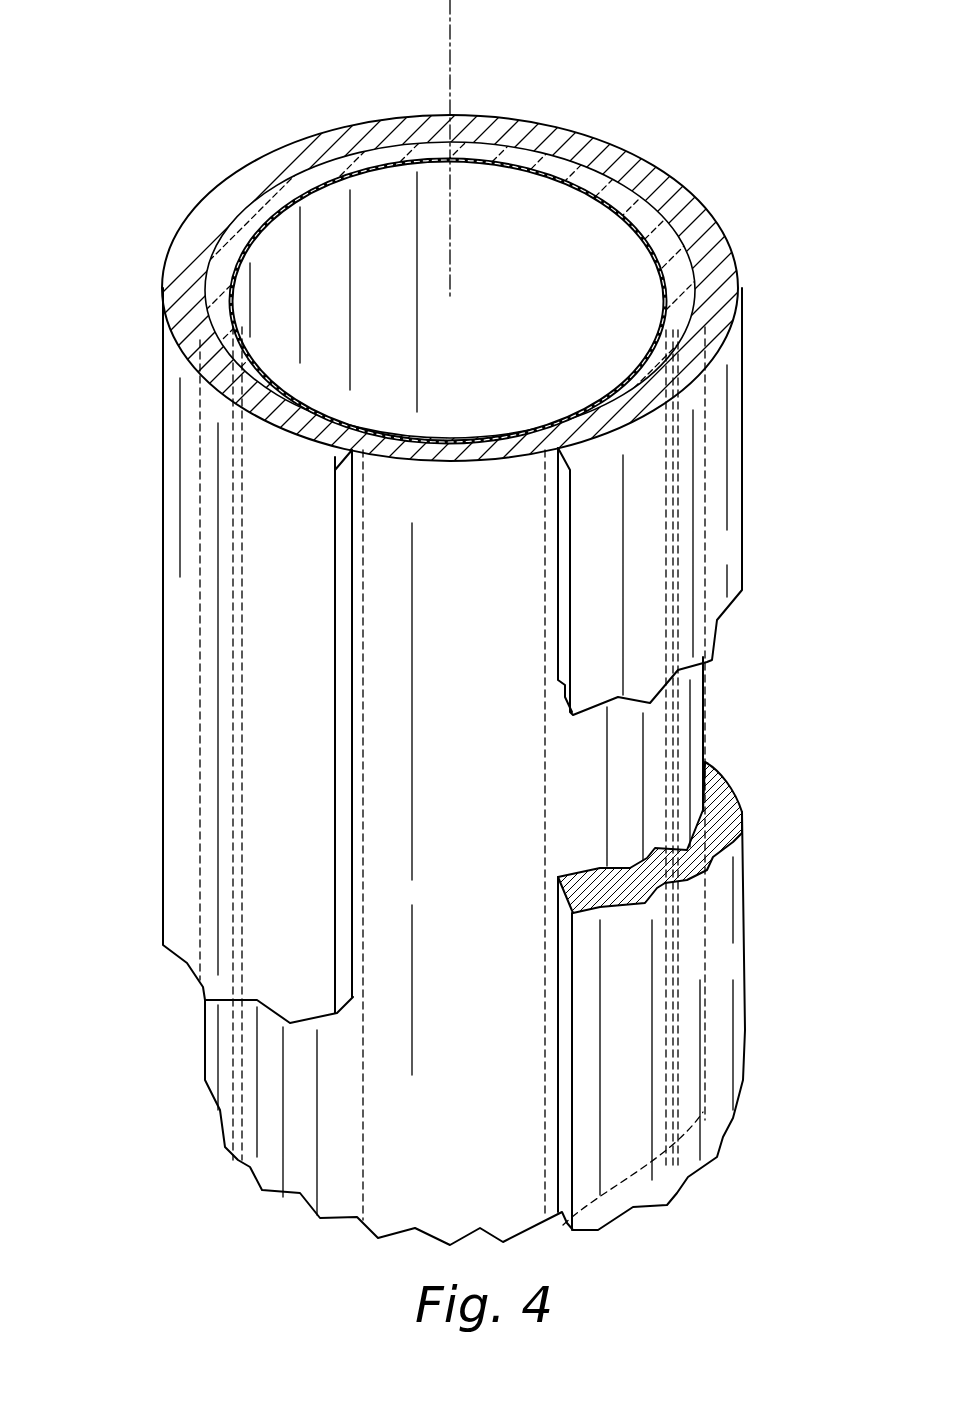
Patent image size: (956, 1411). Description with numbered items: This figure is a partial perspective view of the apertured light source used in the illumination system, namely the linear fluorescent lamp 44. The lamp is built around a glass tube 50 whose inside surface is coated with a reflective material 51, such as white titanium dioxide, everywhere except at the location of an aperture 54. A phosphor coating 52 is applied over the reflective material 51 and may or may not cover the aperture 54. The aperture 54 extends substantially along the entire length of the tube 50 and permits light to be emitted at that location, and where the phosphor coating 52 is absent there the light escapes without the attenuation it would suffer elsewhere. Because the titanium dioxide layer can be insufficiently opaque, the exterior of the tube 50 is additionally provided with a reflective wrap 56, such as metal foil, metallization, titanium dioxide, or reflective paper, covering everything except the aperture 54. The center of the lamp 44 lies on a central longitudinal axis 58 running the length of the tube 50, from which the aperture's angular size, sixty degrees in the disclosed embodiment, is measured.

The fluorescent lamp 44 is at (478, 622).
The glass tube 50 is at (657, 213).
The reflective material 51 is at (308, 178).
The phosphor coating 52 is at (437, 437).
The aperture 54 is at (456, 577).
The reflective wrap 56 is at (264, 645).
The central longitudinal axis 58 is at (450, 30).